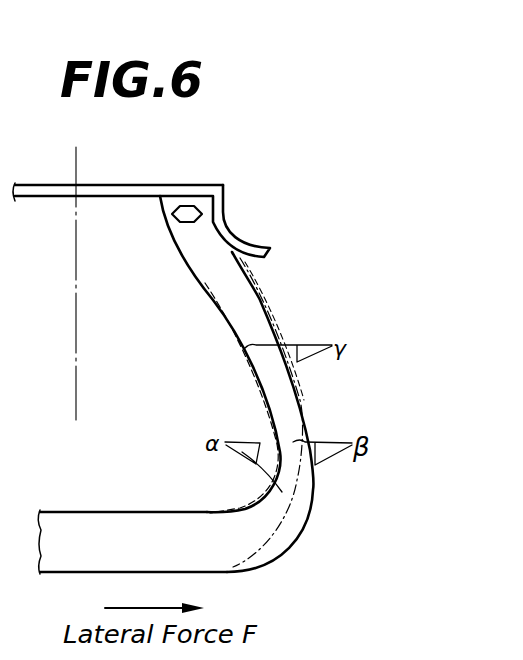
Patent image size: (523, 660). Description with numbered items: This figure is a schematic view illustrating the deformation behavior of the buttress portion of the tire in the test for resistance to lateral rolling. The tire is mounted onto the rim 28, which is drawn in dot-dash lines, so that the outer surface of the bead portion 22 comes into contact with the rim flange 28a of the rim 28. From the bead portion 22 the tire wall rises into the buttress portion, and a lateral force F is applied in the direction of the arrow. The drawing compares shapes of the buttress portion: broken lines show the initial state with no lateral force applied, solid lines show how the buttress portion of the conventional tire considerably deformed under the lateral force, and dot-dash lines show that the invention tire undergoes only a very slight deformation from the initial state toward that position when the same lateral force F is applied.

The rim 28 is at (137, 184).
The rim flange 28a is at (230, 213).
The bead portion 22 is at (203, 249).